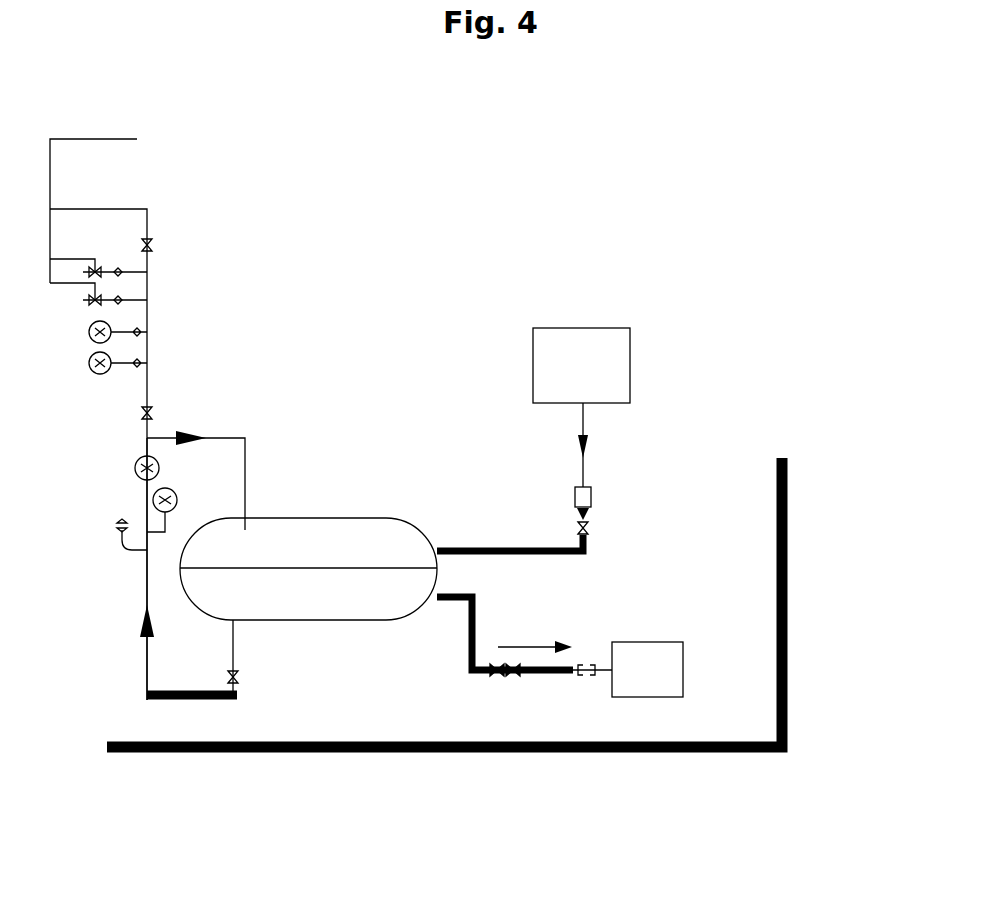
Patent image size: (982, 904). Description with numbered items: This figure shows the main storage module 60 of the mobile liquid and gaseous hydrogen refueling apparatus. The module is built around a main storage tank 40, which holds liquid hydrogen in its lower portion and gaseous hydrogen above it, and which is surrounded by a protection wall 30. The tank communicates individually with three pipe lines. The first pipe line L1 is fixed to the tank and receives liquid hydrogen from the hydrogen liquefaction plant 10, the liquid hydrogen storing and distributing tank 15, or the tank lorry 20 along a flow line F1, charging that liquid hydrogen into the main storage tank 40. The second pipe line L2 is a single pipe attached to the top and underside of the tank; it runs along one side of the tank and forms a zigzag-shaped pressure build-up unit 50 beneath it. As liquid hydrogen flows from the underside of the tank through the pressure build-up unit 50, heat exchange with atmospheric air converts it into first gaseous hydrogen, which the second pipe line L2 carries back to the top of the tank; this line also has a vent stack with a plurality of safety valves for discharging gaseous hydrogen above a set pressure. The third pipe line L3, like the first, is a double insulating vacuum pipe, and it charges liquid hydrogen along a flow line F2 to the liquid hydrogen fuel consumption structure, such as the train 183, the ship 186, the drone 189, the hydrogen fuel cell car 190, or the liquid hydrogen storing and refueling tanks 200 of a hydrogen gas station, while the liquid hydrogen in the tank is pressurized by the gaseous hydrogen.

The main storage module 60 is at (462, 141).
The main storage tank 40 is at (312, 518).
The pressure build-up unit 50 is at (178, 705).
The protection wall 30 is at (788, 565).
The hydrogen liquefaction plant 10 is at (630, 362).
The liquid hydrogen storing and distributing tank 15 is at (581, 365).
The tank lorry 20 is at (581, 365).
The train 183 is at (647, 697).
The ship 186 is at (647, 669).
The drone 189 is at (647, 669).
The hydrogen fuel cell car 190 is at (647, 669).
The liquid hydrogen storing and refueling tanks 200 is at (647, 669).
The first pipe line L1 is at (505, 547).
The second pipe line L2 is at (147, 575).
The third pipe line L3 is at (470, 645).
The flow line F1 is at (603, 461).
The flow line F2 is at (535, 632).